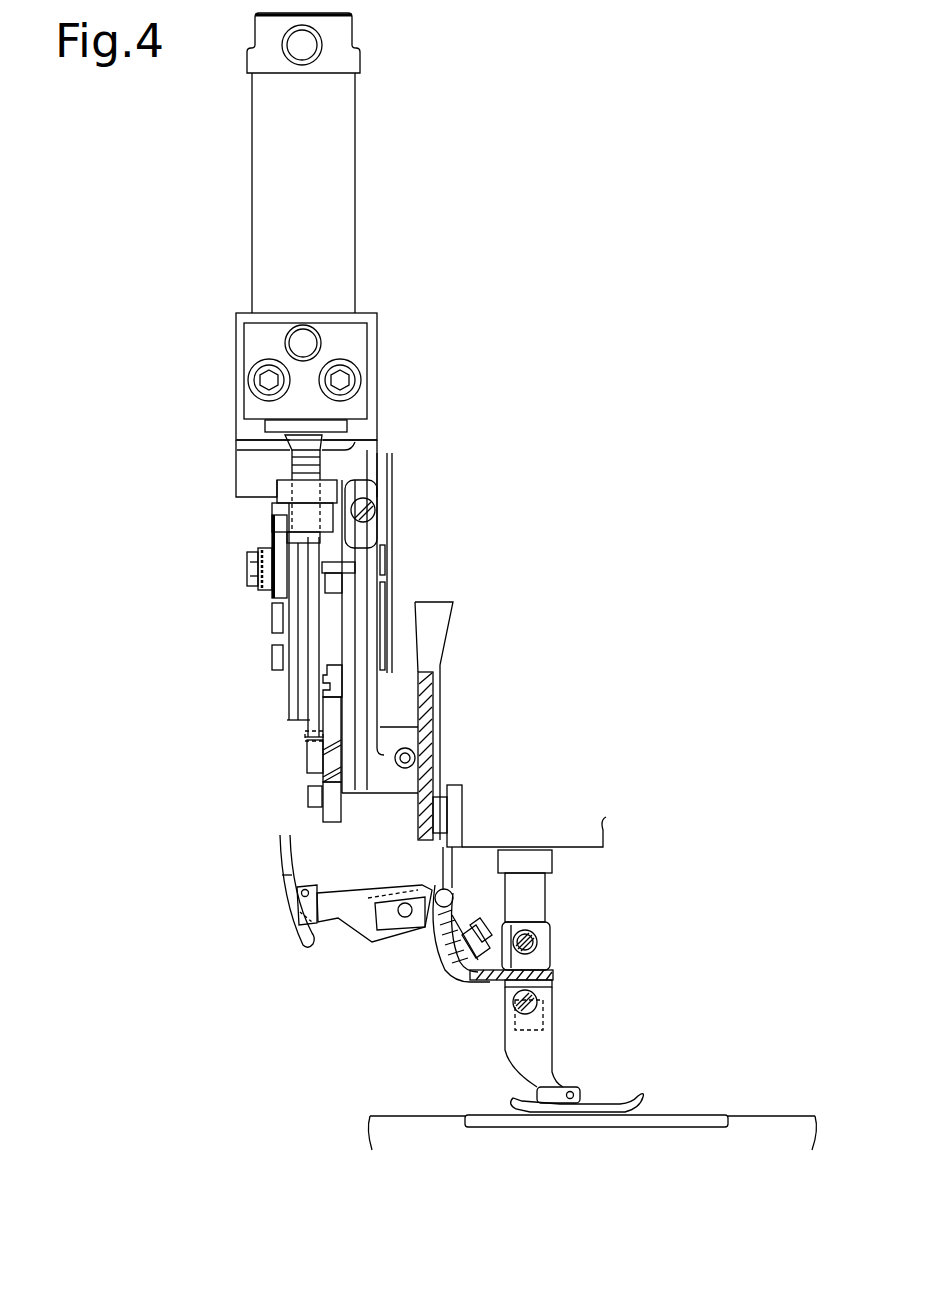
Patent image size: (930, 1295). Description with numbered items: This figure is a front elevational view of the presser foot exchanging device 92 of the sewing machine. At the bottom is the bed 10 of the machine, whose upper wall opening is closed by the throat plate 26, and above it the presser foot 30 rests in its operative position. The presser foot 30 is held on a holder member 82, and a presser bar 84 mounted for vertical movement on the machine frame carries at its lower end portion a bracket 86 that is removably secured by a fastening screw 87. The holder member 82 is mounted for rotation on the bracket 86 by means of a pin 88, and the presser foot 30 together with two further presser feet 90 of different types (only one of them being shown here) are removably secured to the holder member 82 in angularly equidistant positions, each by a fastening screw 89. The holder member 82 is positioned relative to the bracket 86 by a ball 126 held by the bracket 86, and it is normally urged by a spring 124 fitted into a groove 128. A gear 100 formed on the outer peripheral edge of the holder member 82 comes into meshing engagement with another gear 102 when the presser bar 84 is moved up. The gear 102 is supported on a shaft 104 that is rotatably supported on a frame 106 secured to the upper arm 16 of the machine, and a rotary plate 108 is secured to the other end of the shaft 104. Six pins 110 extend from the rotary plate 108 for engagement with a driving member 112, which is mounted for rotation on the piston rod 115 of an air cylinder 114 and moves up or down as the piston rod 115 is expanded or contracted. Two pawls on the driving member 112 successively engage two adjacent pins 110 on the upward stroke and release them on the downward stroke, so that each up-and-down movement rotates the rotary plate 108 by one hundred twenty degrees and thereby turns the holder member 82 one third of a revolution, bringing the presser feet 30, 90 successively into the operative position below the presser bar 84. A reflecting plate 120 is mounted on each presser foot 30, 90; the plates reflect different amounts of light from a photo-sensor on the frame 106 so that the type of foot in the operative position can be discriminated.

The air cylinder 114 is at (347, 243).
The piston rod 115 is at (375, 440).
The presser foot exchanging device 92 is at (192, 496).
The driving member 112 is at (317, 686).
The pins 110 is at (320, 736).
The shaft 104 is at (322, 764).
The rotary plate 108 is at (322, 813).
The frame 106 is at (363, 700).
The gear 102 is at (418, 840).
The groove 128 is at (462, 835).
The spring 124 is at (487, 848).
The upper arm 16 is at (598, 828).
The gear 100 is at (436, 890).
The reflecting plate 120 is at (388, 888).
The presser bar 84 is at (530, 887).
The fastening screw 87 is at (545, 941).
The bracket 86 is at (545, 960).
The fastening screw 89 is at (545, 1003).
The presser foot 90 is at (343, 917).
The ball 126 is at (430, 938).
The pin 88 is at (456, 968).
The holder member 82 is at (495, 980).
The presser foot 30 is at (625, 1100).
The throat plate 26 is at (725, 1115).
The bed 10 is at (792, 1116).